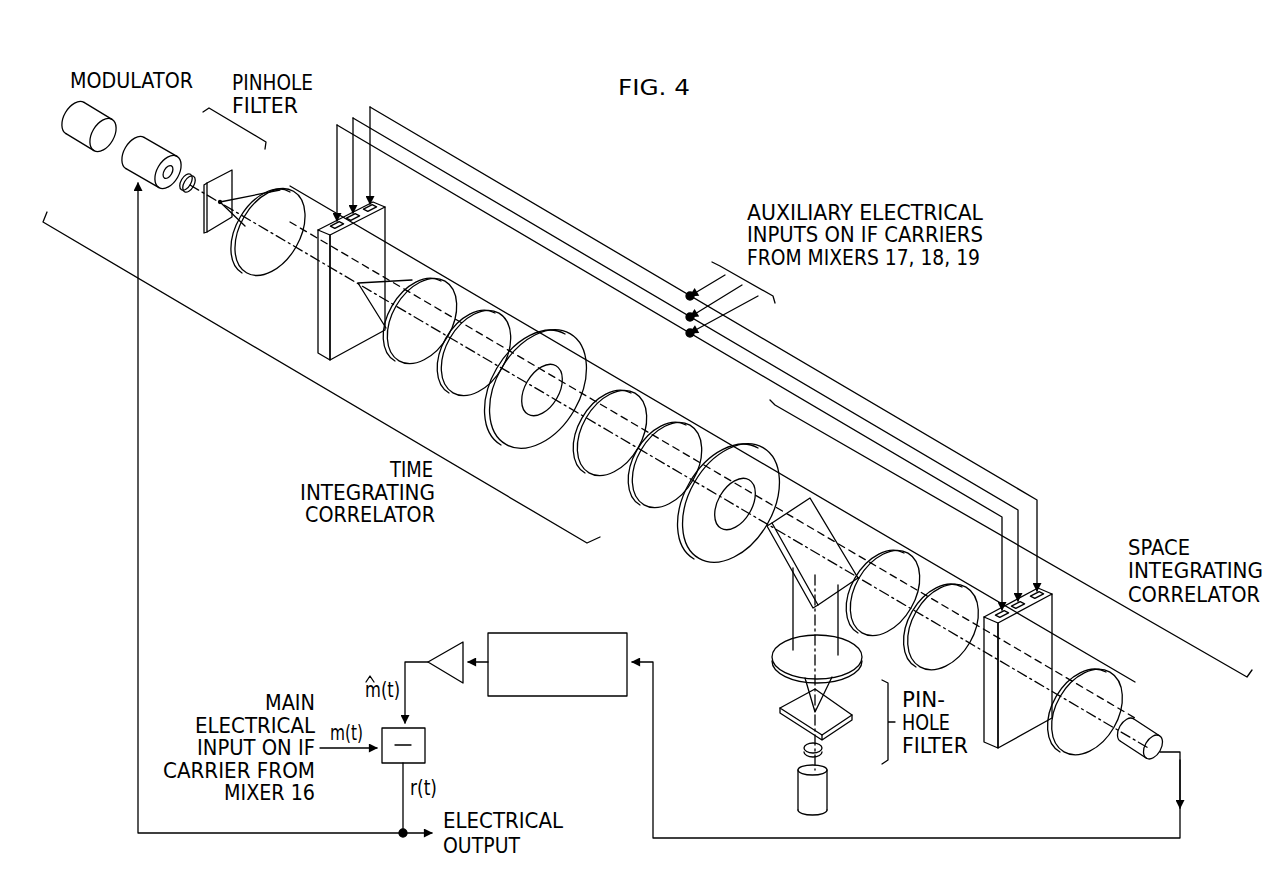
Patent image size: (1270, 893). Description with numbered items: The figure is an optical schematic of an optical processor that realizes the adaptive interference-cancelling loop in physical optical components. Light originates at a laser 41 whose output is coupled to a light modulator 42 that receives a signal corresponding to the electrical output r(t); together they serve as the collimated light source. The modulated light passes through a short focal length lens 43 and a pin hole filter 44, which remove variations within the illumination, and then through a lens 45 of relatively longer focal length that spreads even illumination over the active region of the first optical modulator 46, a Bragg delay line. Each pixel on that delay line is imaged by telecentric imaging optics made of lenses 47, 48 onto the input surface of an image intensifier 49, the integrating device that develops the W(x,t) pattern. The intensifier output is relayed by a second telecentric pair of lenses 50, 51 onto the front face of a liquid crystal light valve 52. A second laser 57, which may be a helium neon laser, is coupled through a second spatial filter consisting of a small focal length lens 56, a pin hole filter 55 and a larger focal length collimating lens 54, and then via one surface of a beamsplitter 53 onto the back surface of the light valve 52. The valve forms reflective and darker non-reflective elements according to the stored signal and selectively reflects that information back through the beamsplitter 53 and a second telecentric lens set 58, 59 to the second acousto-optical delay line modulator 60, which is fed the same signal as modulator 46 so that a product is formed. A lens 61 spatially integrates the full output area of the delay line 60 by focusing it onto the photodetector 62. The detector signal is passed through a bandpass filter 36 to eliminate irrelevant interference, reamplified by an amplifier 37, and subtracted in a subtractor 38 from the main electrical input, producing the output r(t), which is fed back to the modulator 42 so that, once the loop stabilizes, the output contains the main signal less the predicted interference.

The bandpass filter 36 is at (557, 641).
The amplifier 37 is at (445, 644).
The subtractor 38 is at (432, 745).
The laser 41 is at (89, 142).
The light modulator 42 is at (153, 140).
The short focal length lens 43 is at (197, 156).
The pin hole filter 44 is at (231, 186).
The lens 45 is at (252, 231).
The optical modulator 46 is at (282, 317).
The telecentric imaging optics lens 47 is at (411, 329).
The telecentric imaging optics lens 48 is at (458, 355).
The image intensifier 49 is at (553, 373).
The lens 50 is at (594, 433).
The lens 51 is at (648, 465).
The liquid crystal light valve 52 is at (751, 503).
The beamsplitter 53 is at (738, 634).
The collimating lens 54 is at (790, 673).
The pin hole filter 55 is at (830, 712).
The small focal length lens 56 is at (842, 749).
The second laser 57 is at (769, 786).
The telecentric lens 58 is at (885, 576).
The telecentric lens 59 is at (943, 612).
The acousto-optical delay line modulator 60 is at (1016, 707).
The lens 61 is at (1087, 693).
The photodetector 62 is at (1177, 720).